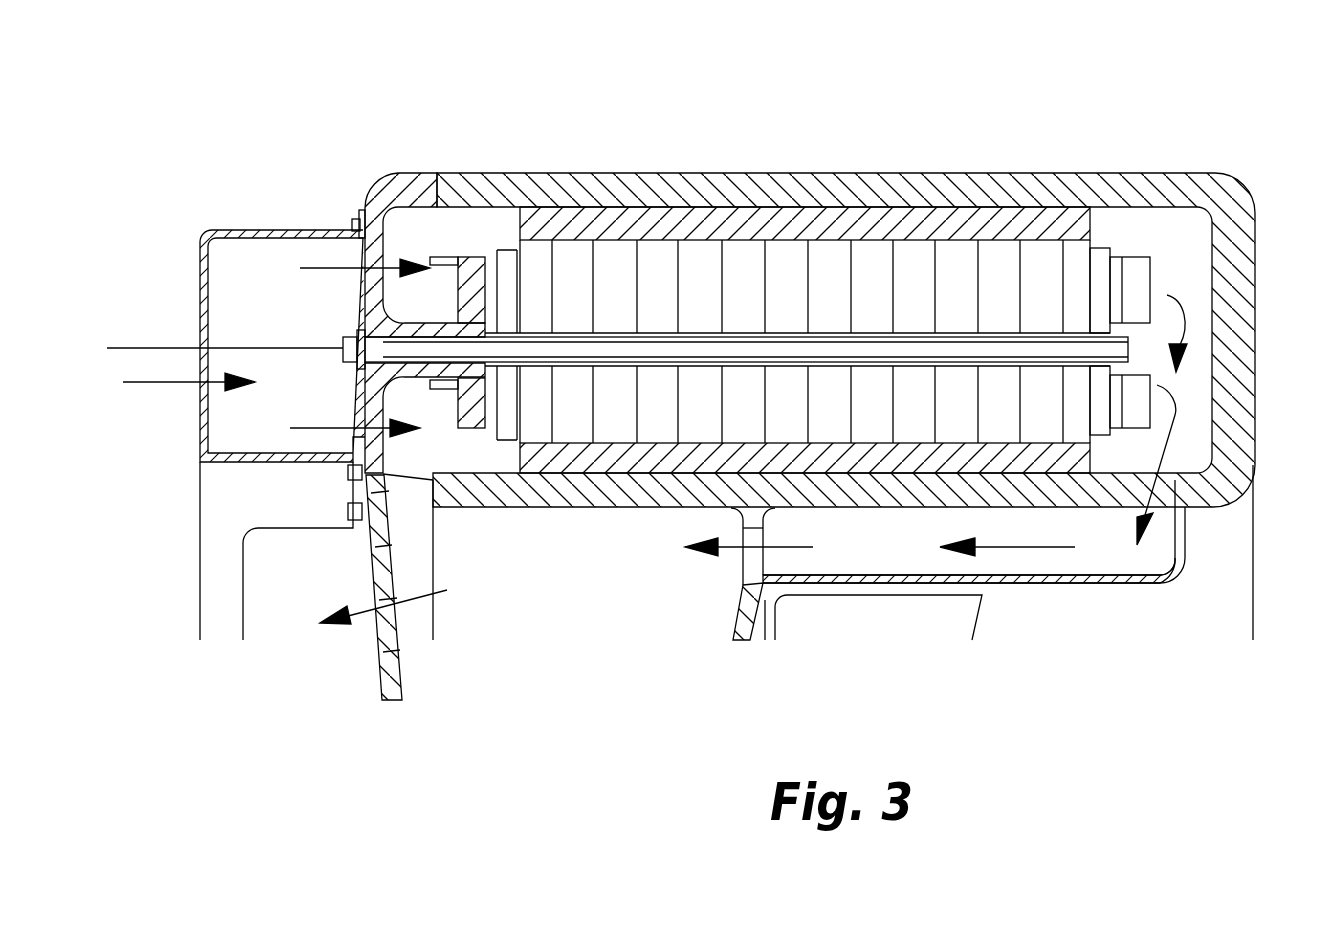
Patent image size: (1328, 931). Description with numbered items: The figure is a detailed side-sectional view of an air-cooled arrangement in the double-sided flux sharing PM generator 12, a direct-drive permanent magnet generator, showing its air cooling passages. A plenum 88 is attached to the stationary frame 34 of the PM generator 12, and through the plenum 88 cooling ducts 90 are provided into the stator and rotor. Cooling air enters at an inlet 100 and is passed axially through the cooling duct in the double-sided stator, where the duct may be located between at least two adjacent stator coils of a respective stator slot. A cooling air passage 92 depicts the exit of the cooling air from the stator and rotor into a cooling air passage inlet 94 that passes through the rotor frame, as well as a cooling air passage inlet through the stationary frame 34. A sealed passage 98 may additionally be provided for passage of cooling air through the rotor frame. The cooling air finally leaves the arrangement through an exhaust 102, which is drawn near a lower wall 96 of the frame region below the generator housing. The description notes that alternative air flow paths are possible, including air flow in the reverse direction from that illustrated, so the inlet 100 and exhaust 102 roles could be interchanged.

The PM generator 12 is at (214, 88).
The stationary frame 34 is at (380, 683).
The plenum 88 is at (240, 278).
The cooling ducts 90 is at (377, 250).
The cooling air passage 92 is at (1167, 490).
The cooling air passage inlet 94 is at (753, 558).
The lower wall 96 is at (397, 630).
The sealed passage 98 is at (1033, 563).
The inlet 100 is at (152, 383).
The exhaust 102 is at (330, 622).